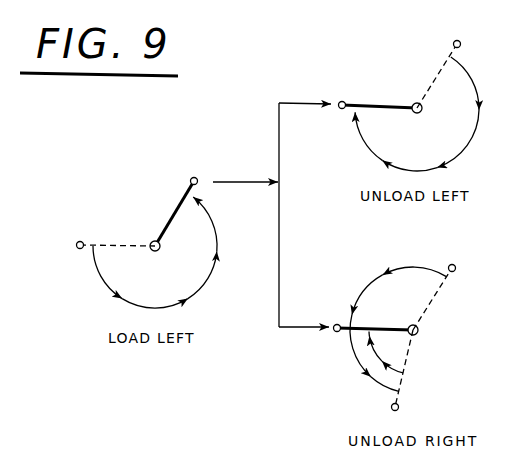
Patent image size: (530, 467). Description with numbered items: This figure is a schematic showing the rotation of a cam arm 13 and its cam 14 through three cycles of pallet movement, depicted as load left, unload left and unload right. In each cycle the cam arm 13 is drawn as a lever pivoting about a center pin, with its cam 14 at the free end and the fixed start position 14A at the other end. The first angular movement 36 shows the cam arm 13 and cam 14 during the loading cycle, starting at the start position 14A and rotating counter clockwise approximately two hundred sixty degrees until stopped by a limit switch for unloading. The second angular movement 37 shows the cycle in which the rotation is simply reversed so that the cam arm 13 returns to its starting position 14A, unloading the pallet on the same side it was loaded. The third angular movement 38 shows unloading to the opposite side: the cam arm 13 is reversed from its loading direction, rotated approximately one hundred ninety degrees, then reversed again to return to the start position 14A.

The cam arm 13 is at (397, 111).
The cam 14 is at (194, 177).
The start position of cams 14A is at (86, 226).
The angular movement 36 is at (148, 219).
The angular movement 37 is at (409, 84).
The angular movement 38 is at (437, 328).